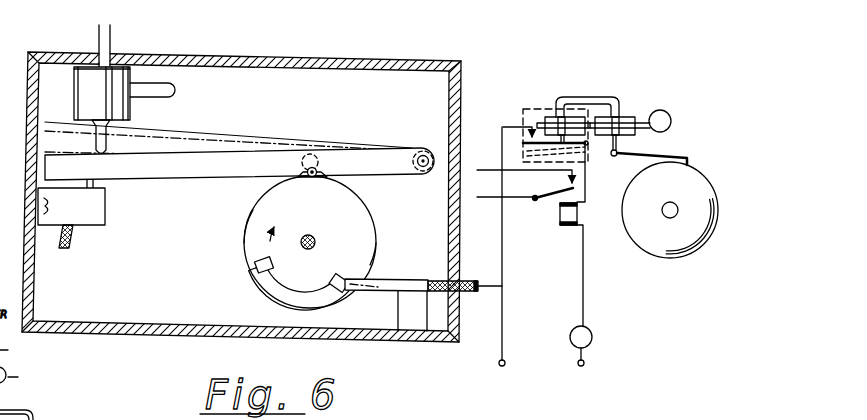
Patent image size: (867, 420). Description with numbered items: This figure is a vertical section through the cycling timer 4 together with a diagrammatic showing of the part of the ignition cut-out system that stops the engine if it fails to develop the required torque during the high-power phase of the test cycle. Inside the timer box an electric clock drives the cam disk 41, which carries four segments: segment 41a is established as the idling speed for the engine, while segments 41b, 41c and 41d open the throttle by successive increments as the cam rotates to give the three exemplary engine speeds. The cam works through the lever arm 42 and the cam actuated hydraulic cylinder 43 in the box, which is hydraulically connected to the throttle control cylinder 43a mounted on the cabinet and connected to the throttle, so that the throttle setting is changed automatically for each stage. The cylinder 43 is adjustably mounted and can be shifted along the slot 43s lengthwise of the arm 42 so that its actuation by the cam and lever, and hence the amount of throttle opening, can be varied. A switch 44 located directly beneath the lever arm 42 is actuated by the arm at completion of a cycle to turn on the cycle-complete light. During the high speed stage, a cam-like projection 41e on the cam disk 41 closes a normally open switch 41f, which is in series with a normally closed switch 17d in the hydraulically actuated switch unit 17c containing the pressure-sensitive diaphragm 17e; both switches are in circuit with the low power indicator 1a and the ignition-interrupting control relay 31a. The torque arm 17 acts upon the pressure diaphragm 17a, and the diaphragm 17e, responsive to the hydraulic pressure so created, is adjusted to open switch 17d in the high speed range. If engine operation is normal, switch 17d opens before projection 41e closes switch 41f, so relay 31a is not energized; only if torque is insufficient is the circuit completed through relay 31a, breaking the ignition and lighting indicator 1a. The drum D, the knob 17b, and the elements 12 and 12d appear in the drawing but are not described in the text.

The cycling timer 4 is at (377, 60).
The throttle control cylinder 43a is at (134, 19).
The cam actuated hydraulic cylinder 43 is at (131, 113).
The slot 43s is at (172, 92).
The lever arm 42 is at (187, 173).
The switch 44 is at (96, 225).
The cam disk 41 is at (325, 223).
The cam segment 41a is at (318, 170).
The cam segment 41b is at (252, 219).
The cam segment 41d is at (378, 249).
The cam segment 41c is at (276, 300).
The cam-like projection 41e is at (257, 278).
The normally open switch 41f is at (387, 290).
The hydraulically actuated switch unit 17c is at (523, 107).
The normally closed switch 17d is at (522, 141).
The pressure-sensitive diaphragm 17e is at (547, 115).
The pressure diaphragm 17a is at (617, 117).
The knob 17b is at (672, 112).
The torque arm 17 is at (624, 160).
The drum D is at (678, 194).
The ignition-interrupting control relay 31a is at (560, 214).
The low power indicator 1a is at (592, 336).
The adjacent element 12 is at (14, 352).
The adjacent element 12d is at (23, 376).